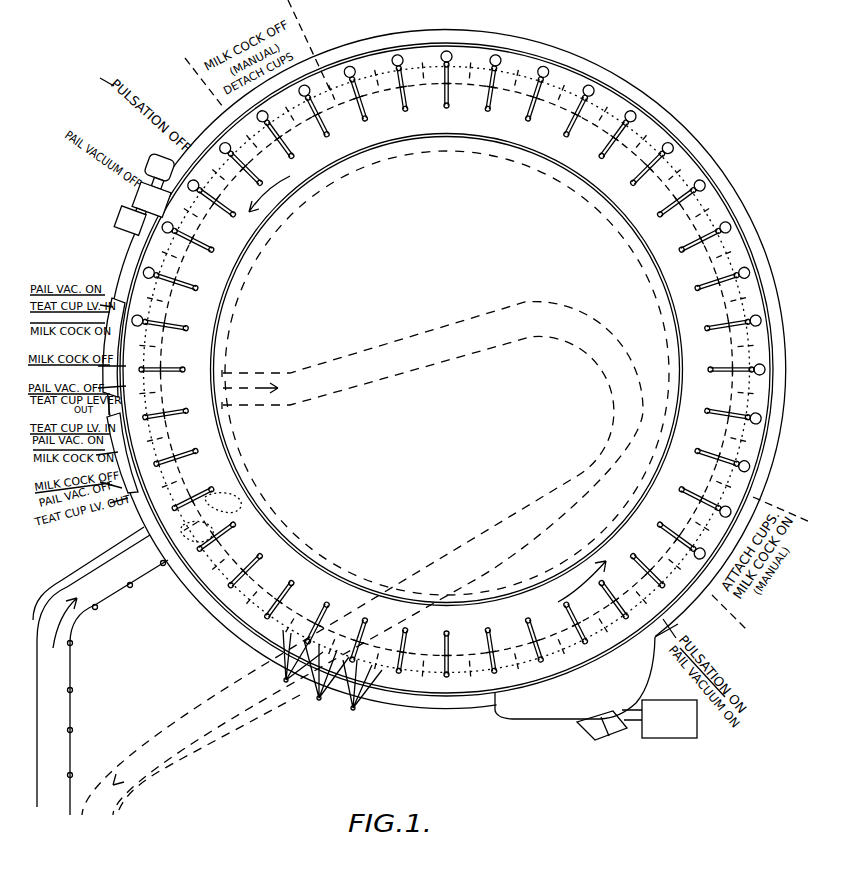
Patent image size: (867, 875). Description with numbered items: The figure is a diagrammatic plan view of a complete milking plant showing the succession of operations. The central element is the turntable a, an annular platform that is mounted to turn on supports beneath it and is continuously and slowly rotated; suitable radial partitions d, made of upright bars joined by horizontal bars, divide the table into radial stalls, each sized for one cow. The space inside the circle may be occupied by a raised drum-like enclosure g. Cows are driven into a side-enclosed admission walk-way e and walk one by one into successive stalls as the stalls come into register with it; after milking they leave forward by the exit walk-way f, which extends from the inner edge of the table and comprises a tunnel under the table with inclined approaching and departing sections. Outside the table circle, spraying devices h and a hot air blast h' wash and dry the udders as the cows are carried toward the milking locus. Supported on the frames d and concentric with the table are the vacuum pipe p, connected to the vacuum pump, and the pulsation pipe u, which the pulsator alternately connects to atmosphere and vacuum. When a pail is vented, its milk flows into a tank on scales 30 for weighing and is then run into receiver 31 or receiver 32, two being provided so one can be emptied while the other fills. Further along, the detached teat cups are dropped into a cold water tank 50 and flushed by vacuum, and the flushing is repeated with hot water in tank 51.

The vacuum pipe p is at (577, 71).
The pulsation pipe u is at (606, 133).
The radial partitions d is at (657, 152).
The turntable a is at (685, 172).
The drum-like enclosure g is at (660, 276).
The exit walk-way f is at (272, 372).
The admission walk-way e is at (146, 558).
The spraying devices h is at (332, 683).
The hot air blast h' is at (596, 696).
The scales 30 is at (148, 195).
The receiver 31 is at (158, 156).
The receiver 32 is at (124, 209).
The cold water tank 50 is at (116, 297).
The hot water tank 51 is at (126, 494).